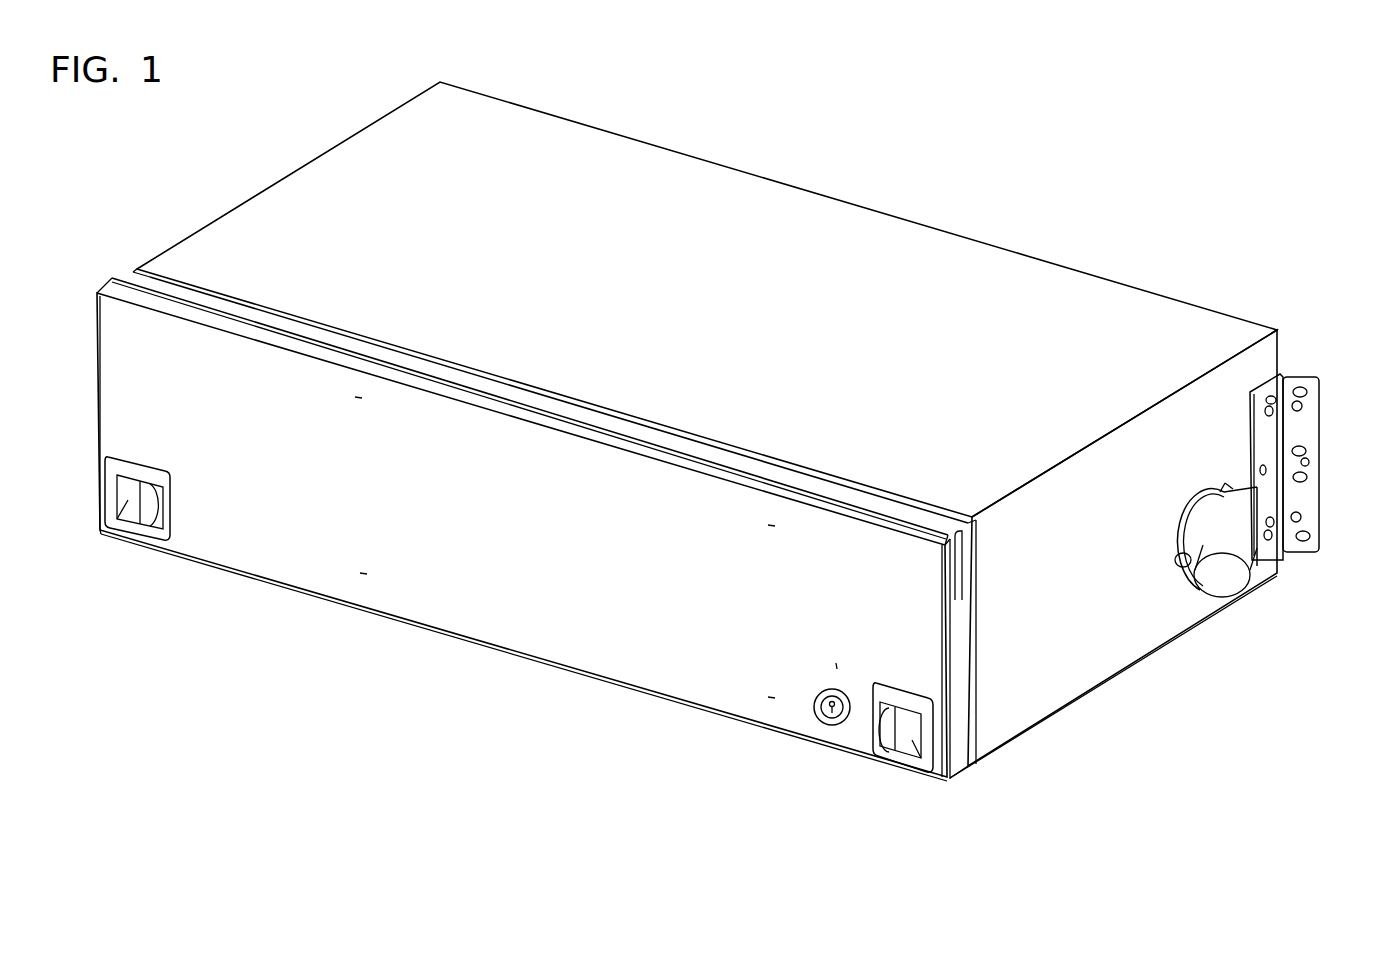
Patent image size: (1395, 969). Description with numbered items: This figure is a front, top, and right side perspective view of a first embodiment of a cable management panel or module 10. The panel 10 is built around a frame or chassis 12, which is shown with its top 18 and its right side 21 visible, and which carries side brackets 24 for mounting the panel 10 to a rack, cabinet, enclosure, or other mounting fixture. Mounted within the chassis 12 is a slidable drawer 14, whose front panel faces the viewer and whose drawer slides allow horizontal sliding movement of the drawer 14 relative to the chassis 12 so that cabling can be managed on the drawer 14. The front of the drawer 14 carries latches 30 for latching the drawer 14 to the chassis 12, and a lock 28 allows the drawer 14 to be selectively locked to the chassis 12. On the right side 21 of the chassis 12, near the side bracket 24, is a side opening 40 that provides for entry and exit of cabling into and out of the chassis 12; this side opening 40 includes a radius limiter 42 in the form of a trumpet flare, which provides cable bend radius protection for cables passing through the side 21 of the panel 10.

The cable management panel 10 is at (762, 130).
The chassis 12 is at (1008, 282).
The drawer 14 is at (603, 630).
The top 18 is at (713, 305).
The right side 21 is at (1058, 613).
The side brackets 24 is at (1320, 412).
The lock 28 is at (828, 722).
The latches 30 is at (123, 528).
The side openings 40 is at (1300, 624).
The radius limiter 42 is at (1210, 588).